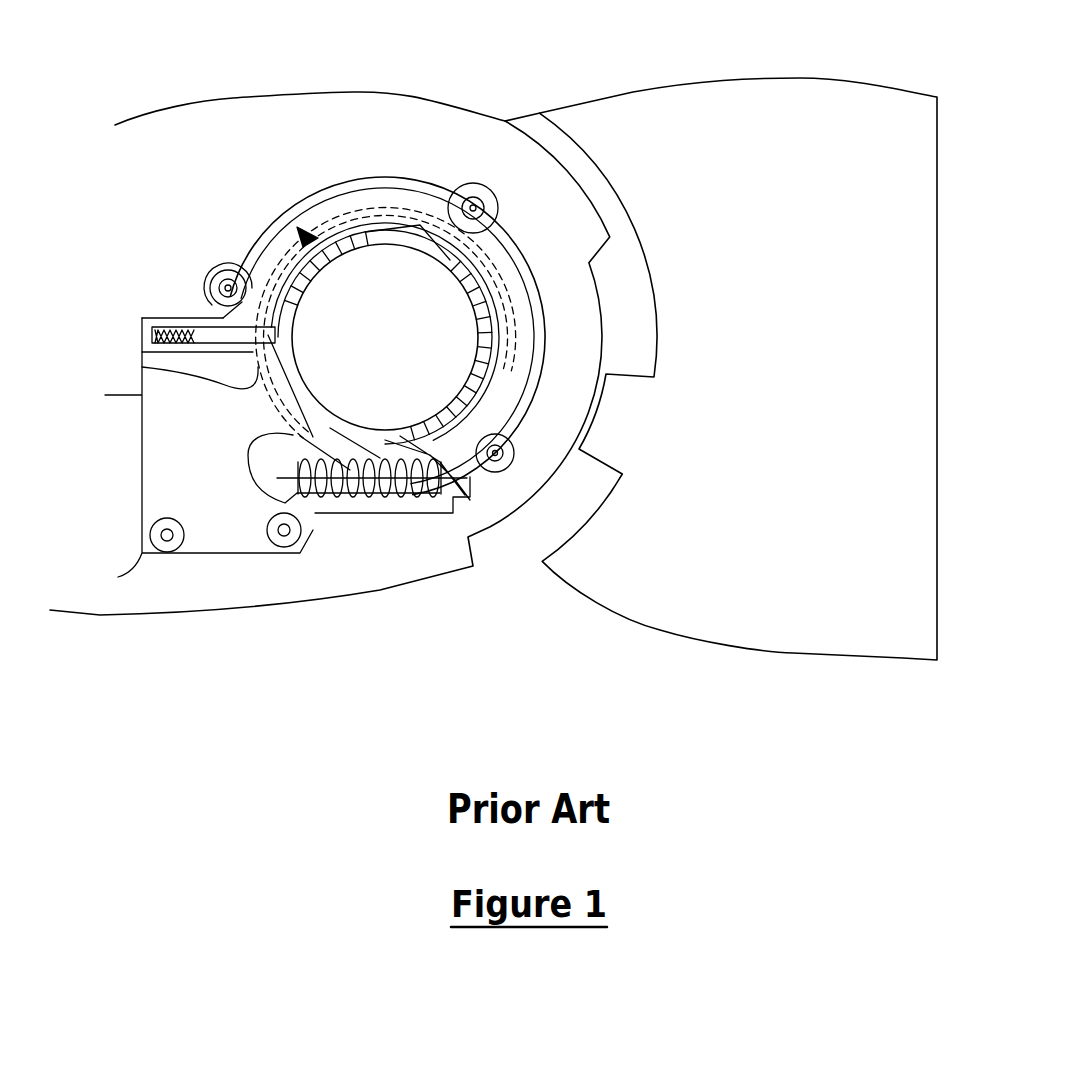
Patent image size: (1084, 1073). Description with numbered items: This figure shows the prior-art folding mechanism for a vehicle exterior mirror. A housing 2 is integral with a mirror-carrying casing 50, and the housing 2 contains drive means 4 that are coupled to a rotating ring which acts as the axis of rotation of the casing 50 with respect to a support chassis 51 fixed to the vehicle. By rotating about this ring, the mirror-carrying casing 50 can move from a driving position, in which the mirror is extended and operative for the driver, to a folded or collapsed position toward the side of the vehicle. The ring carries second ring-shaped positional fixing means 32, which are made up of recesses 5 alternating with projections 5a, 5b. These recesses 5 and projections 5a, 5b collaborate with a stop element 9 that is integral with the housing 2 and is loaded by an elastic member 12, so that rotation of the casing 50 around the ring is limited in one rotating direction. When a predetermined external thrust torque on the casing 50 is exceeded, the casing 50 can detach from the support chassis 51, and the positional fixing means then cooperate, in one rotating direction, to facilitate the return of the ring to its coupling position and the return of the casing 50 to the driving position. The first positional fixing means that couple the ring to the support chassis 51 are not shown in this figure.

The mirror-carrying casing 50 is at (250, 98).
The support chassis 51 is at (767, 228).
The housing 2 is at (350, 183).
The recesses 5 is at (263, 390).
The projection 5a is at (385, 225).
The projection 5b is at (457, 430).
The second ring-shaped positional fixing means 32 is at (267, 222).
The drive means 4 is at (390, 503).
The stop element 9 is at (207, 323).
The elastic member 12 is at (162, 323).